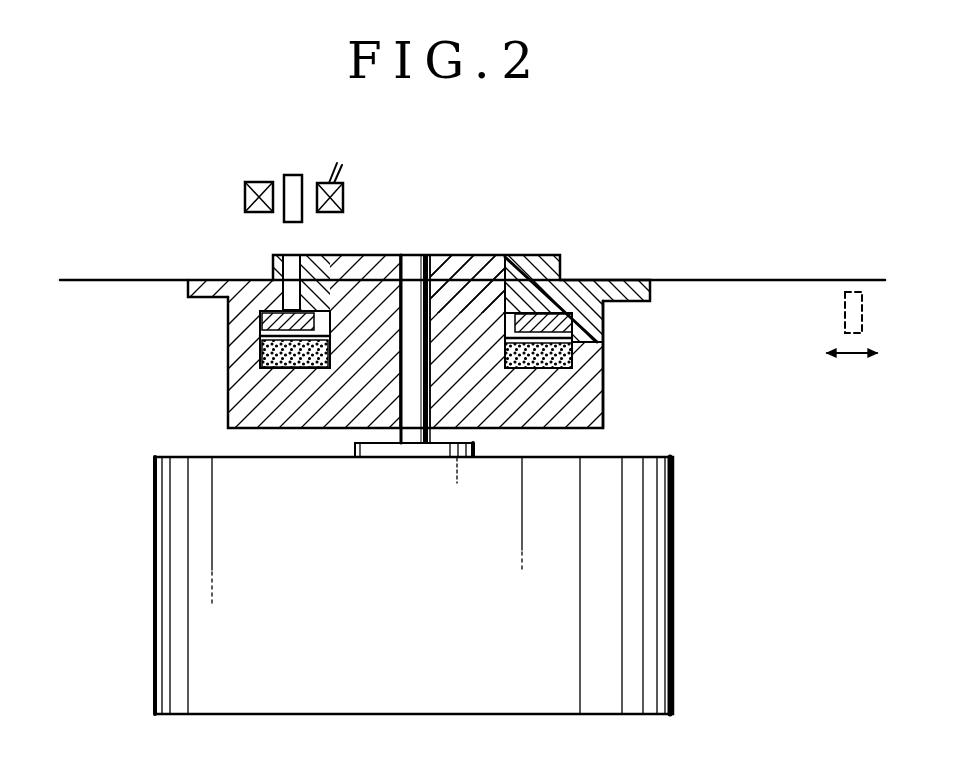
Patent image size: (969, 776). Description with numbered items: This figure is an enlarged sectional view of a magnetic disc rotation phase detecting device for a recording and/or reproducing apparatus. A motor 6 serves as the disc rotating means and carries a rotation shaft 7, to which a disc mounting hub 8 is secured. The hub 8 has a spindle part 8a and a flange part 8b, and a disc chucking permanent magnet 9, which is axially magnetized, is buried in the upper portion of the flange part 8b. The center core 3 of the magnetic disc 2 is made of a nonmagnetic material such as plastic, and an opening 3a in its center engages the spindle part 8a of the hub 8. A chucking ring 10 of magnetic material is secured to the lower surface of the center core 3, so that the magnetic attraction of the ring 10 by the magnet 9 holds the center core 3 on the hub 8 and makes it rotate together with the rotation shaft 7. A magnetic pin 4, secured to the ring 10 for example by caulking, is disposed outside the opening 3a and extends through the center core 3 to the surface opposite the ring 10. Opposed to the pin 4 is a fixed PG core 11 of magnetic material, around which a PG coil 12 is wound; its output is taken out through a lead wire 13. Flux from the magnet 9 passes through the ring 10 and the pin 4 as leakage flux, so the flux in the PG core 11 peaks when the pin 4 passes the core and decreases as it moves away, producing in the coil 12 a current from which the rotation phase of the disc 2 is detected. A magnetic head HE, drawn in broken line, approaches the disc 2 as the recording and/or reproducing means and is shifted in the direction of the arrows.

The magnetic disc 2 is at (712, 282).
The center core 3 is at (538, 262).
The opening 3a is at (503, 258).
The magnetic pin 4 is at (292, 263).
The motor 6 is at (640, 537).
The rotation shaft 7 is at (408, 262).
The disc mounting hub 8 is at (518, 395).
The spindle part 8a is at (460, 275).
The flange part 8b is at (605, 353).
The disc chucking permanent magnet 9 is at (560, 362).
The chucking ring 10 is at (258, 318).
The PG core 11 is at (295, 175).
The PG coil 12 is at (343, 200).
The lead wire 13 is at (340, 165).
The magnetic head HE is at (847, 315).